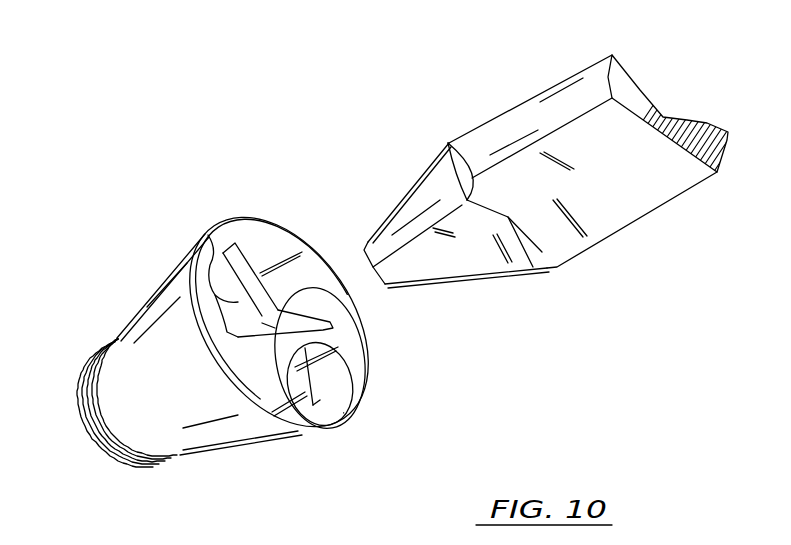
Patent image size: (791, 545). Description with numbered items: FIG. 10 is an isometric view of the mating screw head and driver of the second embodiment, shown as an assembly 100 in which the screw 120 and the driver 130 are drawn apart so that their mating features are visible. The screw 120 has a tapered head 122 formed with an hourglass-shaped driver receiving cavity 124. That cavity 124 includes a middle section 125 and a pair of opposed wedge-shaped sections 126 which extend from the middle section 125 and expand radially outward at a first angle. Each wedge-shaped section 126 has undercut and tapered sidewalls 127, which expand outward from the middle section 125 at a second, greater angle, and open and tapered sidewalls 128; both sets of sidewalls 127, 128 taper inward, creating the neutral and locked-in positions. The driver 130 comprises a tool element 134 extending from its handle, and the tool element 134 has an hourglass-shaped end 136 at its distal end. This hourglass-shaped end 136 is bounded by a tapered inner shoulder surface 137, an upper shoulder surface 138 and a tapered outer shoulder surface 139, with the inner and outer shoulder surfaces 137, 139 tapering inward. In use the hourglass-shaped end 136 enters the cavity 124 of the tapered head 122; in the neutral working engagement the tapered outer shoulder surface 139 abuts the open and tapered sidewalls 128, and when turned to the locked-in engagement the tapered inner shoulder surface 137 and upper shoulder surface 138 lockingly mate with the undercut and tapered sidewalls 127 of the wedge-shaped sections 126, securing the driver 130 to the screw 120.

The tool assembly 100 is at (212, 155).
The screw 120 is at (123, 282).
The tapered head 122 is at (198, 437).
The hourglass-shaped driver receiving cavity 124 is at (300, 432).
The middle section 125 is at (338, 288).
The opposed wedge-shaped sections 126 is at (288, 287).
The undercut and tapered sidewalls 127 is at (213, 247).
The open and tapered sidewalls 128 is at (357, 328).
The driver 130 is at (520, 80).
The tool element 134 is at (642, 203).
The hourglass-shaped end 136 is at (397, 200).
The tapered inner shoulder surface 137 is at (427, 245).
The upper shoulder surface 138 is at (447, 148).
The tapered outer shoulder surface 139 is at (380, 238).